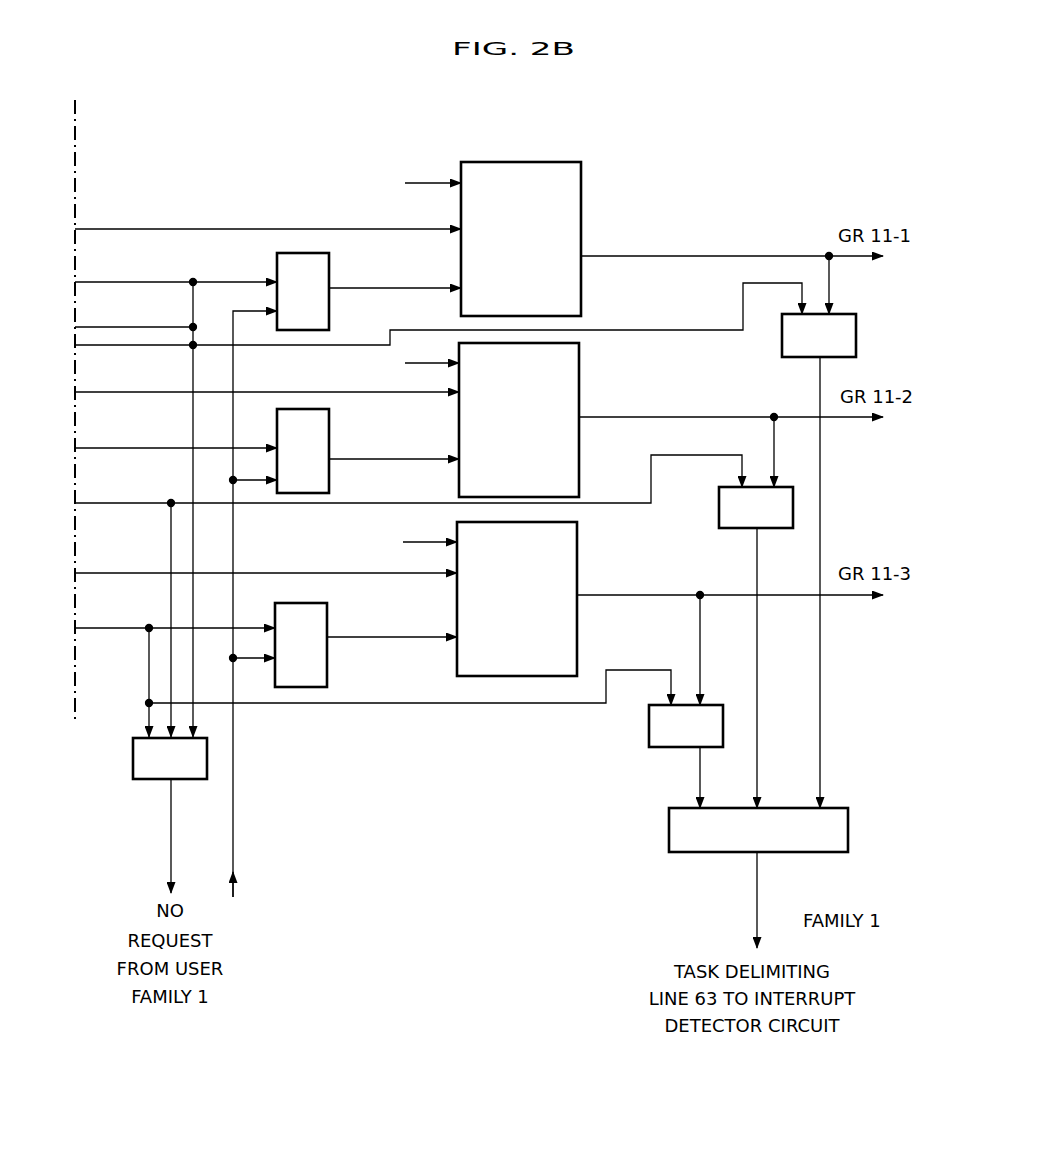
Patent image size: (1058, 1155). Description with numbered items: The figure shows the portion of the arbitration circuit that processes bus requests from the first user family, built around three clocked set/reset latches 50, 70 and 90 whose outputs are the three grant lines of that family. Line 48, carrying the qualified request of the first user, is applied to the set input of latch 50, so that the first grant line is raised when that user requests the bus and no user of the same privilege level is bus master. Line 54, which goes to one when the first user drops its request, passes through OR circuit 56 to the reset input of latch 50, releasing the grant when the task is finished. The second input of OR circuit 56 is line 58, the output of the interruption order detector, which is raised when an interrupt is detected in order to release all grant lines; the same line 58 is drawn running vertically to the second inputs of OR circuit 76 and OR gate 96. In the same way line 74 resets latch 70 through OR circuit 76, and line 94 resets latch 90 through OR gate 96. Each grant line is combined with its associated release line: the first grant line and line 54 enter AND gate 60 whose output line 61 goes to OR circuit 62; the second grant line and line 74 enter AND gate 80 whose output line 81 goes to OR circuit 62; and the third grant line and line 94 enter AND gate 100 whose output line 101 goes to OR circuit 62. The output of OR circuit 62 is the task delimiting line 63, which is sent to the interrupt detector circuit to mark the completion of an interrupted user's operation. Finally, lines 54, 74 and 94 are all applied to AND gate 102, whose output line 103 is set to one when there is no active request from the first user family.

The output line of AND gate 46 48 is at (172, 229).
The latch 50 is at (582, 207).
The output line of inverter 52 54 is at (219, 282).
The OR circuit 56 is at (332, 277).
The output line of interruption order detector circuit 58 is at (233, 797).
The AND gate 60 is at (782, 345).
The output line of AND gate 60 61 is at (820, 520).
The OR circuit 62 is at (848, 825).
The task delimiting line 63 is at (757, 910).
The latch 70 is at (580, 388).
The output line of inverter 72 74 is at (100, 448).
The OR circuit 76 is at (332, 447).
The AND gate 80 is at (719, 515).
The output line of AND gate 80 81 is at (757, 583).
The latch 90 is at (578, 567).
The output line of inverter 92 94 is at (100, 628).
The OR gate 96 is at (330, 625).
The AND gate 100 is at (649, 733).
The output line of AND gate 100 101 is at (700, 753).
The AND gate 102 is at (133, 770).
The output line of AND gate 102 103 is at (171, 850).